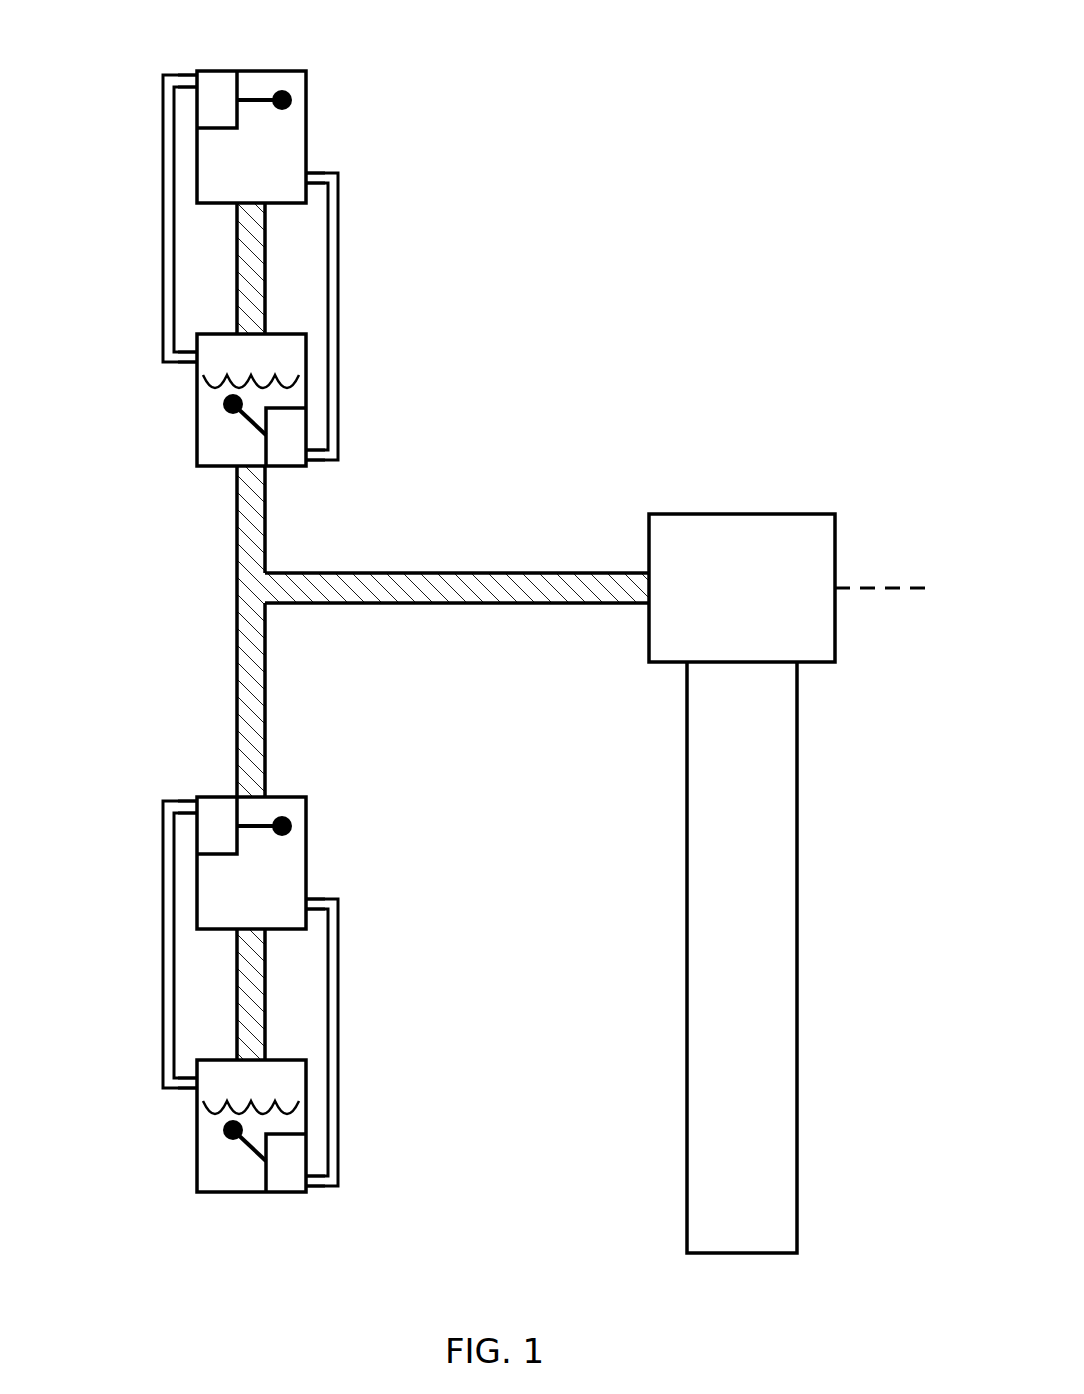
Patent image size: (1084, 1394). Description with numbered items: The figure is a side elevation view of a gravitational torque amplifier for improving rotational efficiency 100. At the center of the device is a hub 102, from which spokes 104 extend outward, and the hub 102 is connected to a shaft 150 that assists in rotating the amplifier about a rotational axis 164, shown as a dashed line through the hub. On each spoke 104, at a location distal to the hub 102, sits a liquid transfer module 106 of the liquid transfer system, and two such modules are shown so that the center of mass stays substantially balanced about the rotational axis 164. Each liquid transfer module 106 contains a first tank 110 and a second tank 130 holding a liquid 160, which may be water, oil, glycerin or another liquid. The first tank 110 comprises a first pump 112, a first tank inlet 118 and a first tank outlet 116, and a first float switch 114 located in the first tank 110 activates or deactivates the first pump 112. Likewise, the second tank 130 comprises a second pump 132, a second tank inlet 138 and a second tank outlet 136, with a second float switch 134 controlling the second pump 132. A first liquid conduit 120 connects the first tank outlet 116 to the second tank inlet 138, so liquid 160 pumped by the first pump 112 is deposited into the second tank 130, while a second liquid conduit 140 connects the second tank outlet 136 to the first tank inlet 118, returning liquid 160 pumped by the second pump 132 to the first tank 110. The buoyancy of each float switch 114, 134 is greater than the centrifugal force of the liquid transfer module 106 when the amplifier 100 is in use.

The gravitational torque amplifier for improving rotational efficiency 100 is at (865, 47).
The hub 102 is at (237, 598).
The spokes 104 is at (237, 528).
The liquid transfer module 106 is at (366, 58).
The first tank 110 is at (276, 71).
The first pump 112 is at (207, 80).
The first float switch 114 is at (293, 94).
The first tank outlet 116 is at (195, 88).
The first tank inlet 118 is at (310, 175).
The first liquid conduit 120 is at (163, 240).
The second tank 130 is at (197, 442).
The second pump 132 is at (278, 455).
The second float switch 134 is at (243, 400).
The second tank outlet 136 is at (313, 458).
The second tank inlet 138 is at (195, 358).
The second liquid conduit 140 is at (338, 305).
The shaft 150 is at (475, 572).
The liquid 160 is at (210, 445).
The rotational axis 164 is at (860, 588).